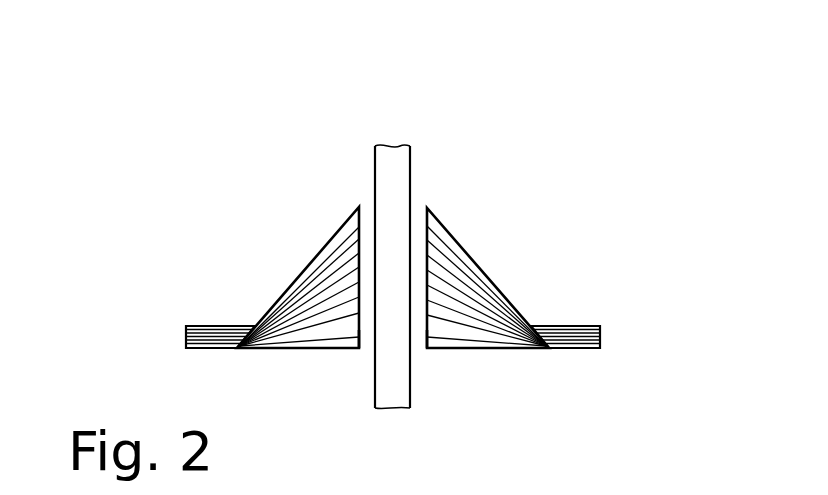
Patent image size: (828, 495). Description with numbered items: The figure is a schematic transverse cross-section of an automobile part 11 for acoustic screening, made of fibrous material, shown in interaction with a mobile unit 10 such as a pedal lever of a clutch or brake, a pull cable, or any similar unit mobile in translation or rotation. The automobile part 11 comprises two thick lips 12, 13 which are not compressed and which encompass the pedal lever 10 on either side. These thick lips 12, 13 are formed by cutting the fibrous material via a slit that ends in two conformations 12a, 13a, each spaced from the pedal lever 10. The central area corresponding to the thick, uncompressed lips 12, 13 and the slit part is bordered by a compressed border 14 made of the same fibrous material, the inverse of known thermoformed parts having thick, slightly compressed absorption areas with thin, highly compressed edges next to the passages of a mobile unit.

The mobile unit 10 is at (383, 174).
The automobile part 11 is at (630, 205).
The thick lip 12 is at (485, 242).
The conformation 12a is at (418, 320).
The thick lip 13 is at (288, 269).
The conformation 13a is at (365, 320).
The compressed border 14 is at (185, 337).